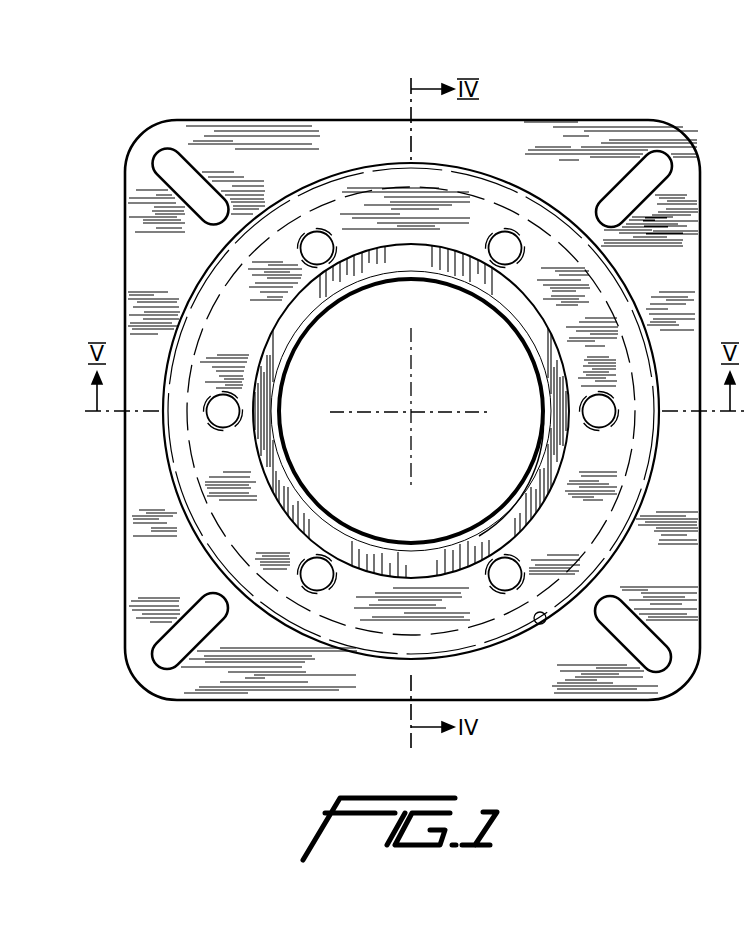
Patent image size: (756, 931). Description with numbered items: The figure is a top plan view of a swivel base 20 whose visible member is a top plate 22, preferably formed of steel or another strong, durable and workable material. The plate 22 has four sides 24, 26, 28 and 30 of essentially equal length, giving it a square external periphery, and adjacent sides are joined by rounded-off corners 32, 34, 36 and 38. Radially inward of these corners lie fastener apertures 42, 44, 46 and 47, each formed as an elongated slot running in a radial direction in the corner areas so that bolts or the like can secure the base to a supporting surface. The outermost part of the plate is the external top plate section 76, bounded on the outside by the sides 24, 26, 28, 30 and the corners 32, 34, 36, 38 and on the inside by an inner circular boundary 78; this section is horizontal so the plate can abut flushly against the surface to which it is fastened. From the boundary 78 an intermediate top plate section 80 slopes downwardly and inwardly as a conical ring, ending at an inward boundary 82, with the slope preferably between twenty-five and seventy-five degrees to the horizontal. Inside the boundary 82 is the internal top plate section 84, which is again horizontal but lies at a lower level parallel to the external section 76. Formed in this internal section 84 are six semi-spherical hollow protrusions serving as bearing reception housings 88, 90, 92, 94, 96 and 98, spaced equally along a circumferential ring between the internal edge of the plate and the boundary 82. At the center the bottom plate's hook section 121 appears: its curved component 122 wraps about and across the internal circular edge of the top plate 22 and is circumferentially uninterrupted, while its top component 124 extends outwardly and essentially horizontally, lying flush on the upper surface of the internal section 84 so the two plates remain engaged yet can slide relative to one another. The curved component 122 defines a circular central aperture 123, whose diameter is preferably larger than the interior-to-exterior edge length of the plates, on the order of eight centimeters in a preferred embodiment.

The swivel base 20 is at (226, 102).
The top plate 22 is at (518, 140).
The side 24 is at (300, 120).
The side 26 is at (125, 320).
The side 28 is at (270, 700).
The side 30 is at (703, 518).
The rounded corner 32 is at (665, 128).
The rounded corner 34 is at (140, 140).
The rounded corner 36 is at (142, 683).
The rounded corner 38 is at (668, 700).
The fastener aperture 42 is at (662, 184).
The fastener aperture 44 is at (168, 186).
The fastener aperture 46 is at (182, 666).
The fastener aperture 47 is at (665, 656).
The external top plate section 76 is at (538, 676).
The inner circular boundary 78 is at (545, 626).
The intermediate top plate section 80 is at (190, 483).
The inward boundary 82 is at (222, 528).
The internal top plate section 84 is at (275, 536).
The reception housing 88 is at (224, 394).
The reception housing 90 is at (316, 231).
The reception housing 92 is at (519, 239).
The reception housing 94 is at (597, 394).
The reception housing 96 is at (522, 559).
The reception housing 98 is at (305, 587).
The hook section 121 is at (278, 455).
The curved component 122 is at (485, 525).
The central aperture 123 is at (438, 383).
The top component 124 is at (520, 510).